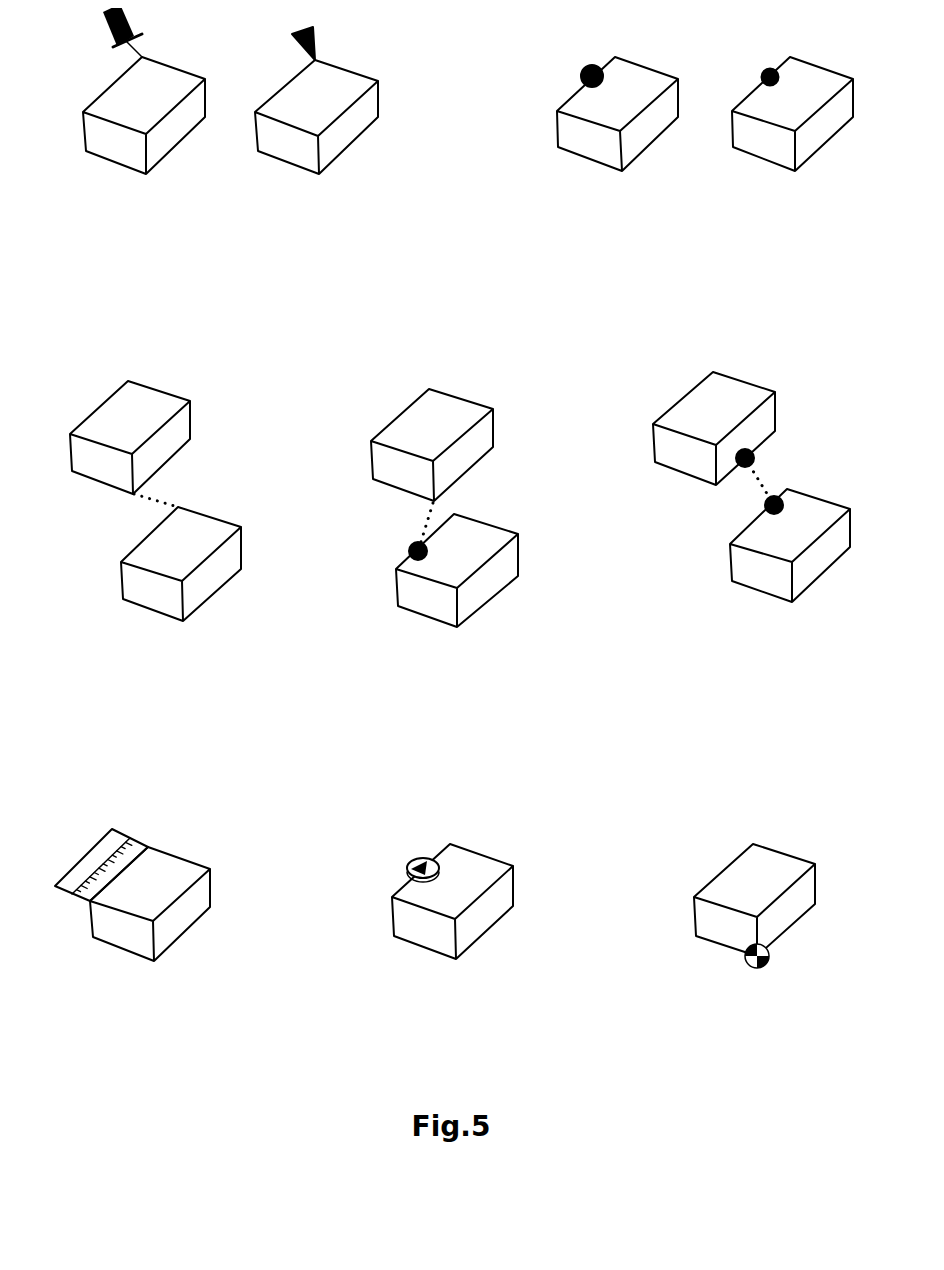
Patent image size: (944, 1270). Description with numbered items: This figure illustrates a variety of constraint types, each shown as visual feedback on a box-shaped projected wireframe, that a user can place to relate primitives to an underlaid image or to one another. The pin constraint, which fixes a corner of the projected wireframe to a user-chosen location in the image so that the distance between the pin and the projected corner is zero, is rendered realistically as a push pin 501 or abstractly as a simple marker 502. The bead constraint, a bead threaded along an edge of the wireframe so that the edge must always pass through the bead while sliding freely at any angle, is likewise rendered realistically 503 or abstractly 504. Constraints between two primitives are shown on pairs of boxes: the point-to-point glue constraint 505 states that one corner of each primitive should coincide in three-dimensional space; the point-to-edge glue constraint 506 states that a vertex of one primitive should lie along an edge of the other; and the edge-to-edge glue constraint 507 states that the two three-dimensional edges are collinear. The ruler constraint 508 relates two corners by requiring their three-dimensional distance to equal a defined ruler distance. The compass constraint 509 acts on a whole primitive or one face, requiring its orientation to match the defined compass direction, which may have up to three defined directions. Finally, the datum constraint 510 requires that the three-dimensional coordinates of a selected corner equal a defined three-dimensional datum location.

The realistically rendered pin constraint 501 is at (144, 122).
The abstractly rendered pin constraint 502 is at (316, 132).
The realistically rendered bead constraint 503 is at (617, 147).
The abstractly rendered bead constraint 504 is at (792, 147).
The point-to-point glue constraint 505 is at (155, 538).
The point-to-edge glue constraint 506 is at (444, 542).
The edge-to-edge glue constraint 507 is at (751, 533).
The ruler constraint 508 is at (132, 923).
The compass constraint 509 is at (452, 931).
The datum constraint 510 is at (754, 931).